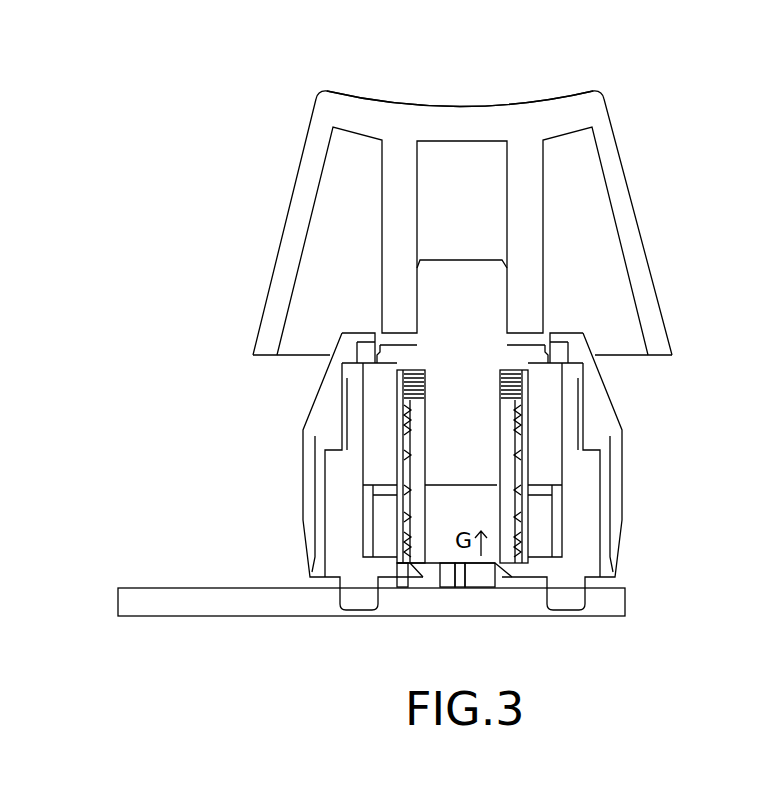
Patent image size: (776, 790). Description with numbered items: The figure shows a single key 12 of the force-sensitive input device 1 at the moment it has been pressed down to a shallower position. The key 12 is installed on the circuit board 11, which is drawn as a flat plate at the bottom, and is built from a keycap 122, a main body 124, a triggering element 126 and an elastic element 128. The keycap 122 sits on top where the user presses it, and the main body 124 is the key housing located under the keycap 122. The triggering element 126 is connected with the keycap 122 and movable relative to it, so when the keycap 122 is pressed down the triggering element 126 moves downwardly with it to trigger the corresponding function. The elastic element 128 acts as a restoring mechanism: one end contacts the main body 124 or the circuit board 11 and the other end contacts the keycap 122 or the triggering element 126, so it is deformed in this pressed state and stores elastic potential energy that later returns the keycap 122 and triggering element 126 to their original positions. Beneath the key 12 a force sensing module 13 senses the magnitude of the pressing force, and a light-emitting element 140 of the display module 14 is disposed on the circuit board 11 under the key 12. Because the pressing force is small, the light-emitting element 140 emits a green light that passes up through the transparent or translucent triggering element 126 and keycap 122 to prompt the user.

The force-sensitive input device 1 is at (682, 55).
The circuit board 11 is at (242, 600).
The key 12 is at (203, 370).
The keycap 122 is at (637, 265).
The main body 124 is at (597, 412).
The triggering element 126 is at (438, 320).
The elastic element 128 is at (507, 370).
The force sensing module 13 is at (438, 580).
The display module 14 is at (485, 580).
The light-emitting element 140 is at (498, 580).